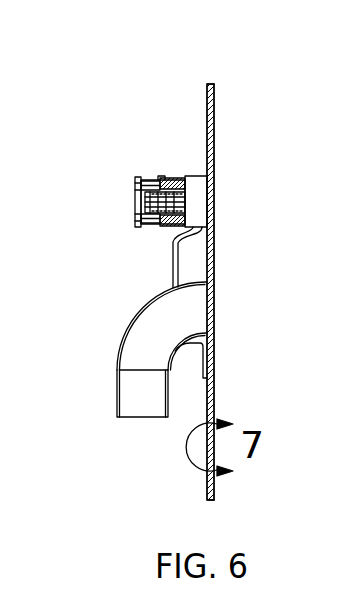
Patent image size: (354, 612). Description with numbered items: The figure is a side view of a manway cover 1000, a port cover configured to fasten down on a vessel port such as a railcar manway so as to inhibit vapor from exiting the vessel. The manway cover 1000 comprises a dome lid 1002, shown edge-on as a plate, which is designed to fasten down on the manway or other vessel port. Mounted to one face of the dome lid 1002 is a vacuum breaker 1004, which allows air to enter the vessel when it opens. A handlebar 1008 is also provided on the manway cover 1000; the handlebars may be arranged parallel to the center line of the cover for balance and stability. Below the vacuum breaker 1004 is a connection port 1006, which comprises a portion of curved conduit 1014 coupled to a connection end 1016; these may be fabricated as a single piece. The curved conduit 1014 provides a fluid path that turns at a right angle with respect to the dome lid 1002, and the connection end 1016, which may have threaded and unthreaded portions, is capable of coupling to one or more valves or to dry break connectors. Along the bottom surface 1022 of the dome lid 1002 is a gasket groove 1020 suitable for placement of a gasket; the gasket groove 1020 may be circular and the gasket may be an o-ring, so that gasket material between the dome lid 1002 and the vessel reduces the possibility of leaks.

The manway cover 1000 is at (149, 60).
The dome lid 1002 is at (215, 97).
The vacuum breaker 1004 is at (147, 178).
The connection port 1006 is at (120, 343).
The handlebar 1008 is at (172, 263).
The curved conduit 1014 is at (143, 307).
The connection end 1016 is at (118, 392).
The gasket groove 1020 is at (215, 139).
The bottom surface 1022 is at (214, 392).